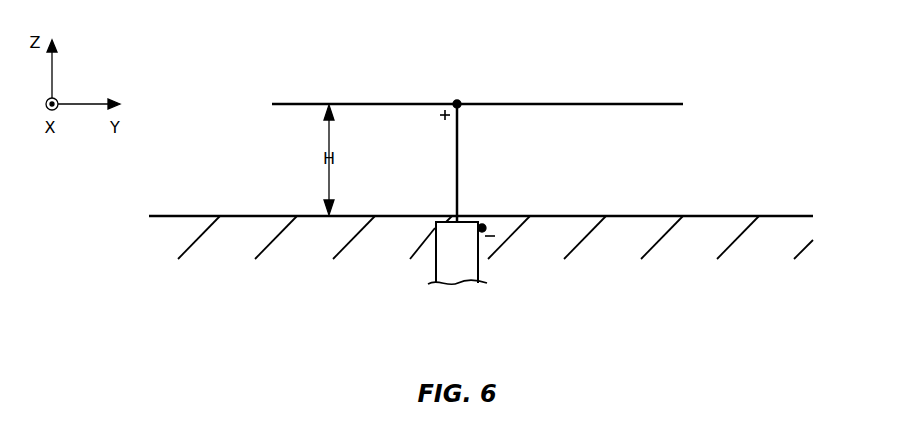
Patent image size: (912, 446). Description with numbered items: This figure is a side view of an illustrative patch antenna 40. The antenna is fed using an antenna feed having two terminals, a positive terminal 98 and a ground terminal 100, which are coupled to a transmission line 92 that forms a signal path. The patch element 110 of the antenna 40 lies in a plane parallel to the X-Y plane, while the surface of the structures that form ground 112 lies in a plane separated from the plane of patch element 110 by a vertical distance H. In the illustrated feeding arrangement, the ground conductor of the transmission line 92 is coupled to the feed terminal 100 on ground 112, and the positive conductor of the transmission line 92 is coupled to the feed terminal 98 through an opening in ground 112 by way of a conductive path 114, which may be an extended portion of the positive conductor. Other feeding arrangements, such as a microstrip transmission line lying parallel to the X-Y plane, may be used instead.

The patch antenna 40 is at (716, 59).
The patch element 110 is at (584, 103).
The antenna feed terminal 98 is at (459, 106).
The conductive path 114 is at (456, 148).
The ground 112 is at (625, 216).
The antenna feed terminal 100 is at (485, 225).
The transmission line 92 is at (496, 267).